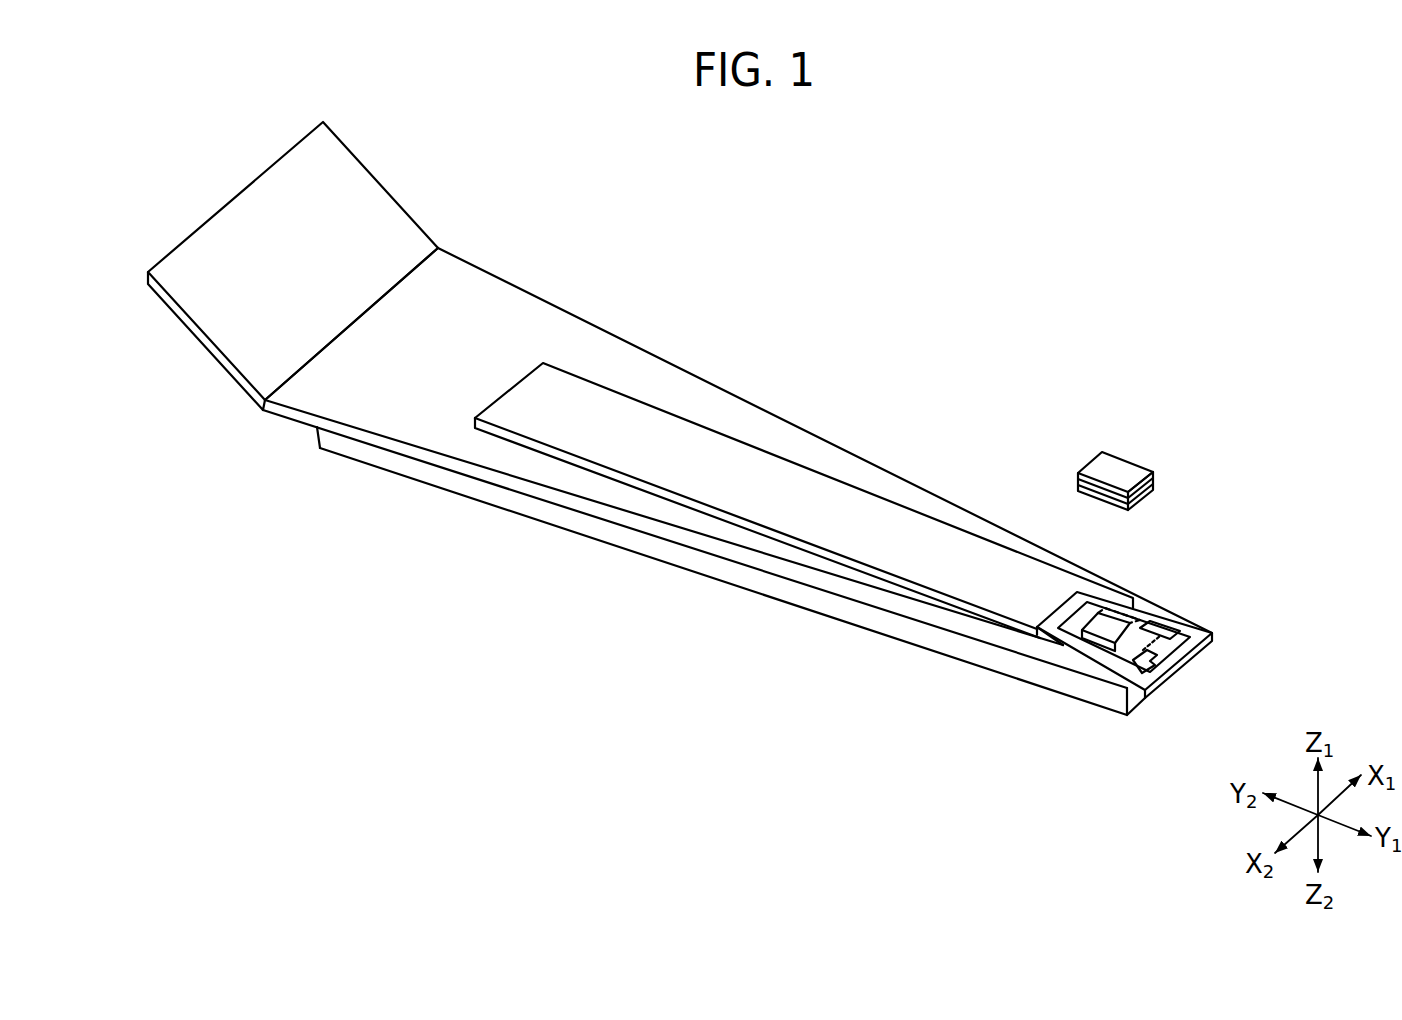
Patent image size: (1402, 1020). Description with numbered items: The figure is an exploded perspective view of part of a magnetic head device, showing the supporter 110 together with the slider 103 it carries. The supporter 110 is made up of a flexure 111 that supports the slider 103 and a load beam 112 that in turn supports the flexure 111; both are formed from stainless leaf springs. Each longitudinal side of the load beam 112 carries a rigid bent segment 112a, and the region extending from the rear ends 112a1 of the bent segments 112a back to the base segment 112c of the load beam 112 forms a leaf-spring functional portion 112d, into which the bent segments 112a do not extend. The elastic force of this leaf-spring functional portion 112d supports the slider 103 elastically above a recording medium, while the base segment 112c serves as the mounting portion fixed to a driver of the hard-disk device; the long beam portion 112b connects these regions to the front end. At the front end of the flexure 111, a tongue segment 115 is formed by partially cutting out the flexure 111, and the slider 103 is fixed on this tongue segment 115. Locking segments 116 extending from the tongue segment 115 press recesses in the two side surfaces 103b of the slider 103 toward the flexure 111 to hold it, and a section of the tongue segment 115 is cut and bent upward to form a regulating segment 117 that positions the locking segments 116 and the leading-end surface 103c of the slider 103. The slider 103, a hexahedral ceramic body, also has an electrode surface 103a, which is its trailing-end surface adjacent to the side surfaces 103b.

The supporter 110 is at (478, 250).
The load beam 112 is at (553, 325).
The bent segment 112a is at (392, 462).
The rear end of bent segment 112a1 is at (317, 428).
The beam portion 112b is at (578, 484).
The base segment 112c is at (357, 205).
The leaf-spring functional portion 112d is at (283, 408).
The flexure 111 is at (593, 398).
The tongue segment 115 is at (1198, 650).
The locking segment 116 is at (1122, 608).
The regulating segment 117 is at (1097, 605).
The slider 103 is at (1162, 454).
The electrode surface 103a is at (1147, 495).
The side surface 103b is at (1127, 457).
The leading-end surface 103c is at (1097, 468).